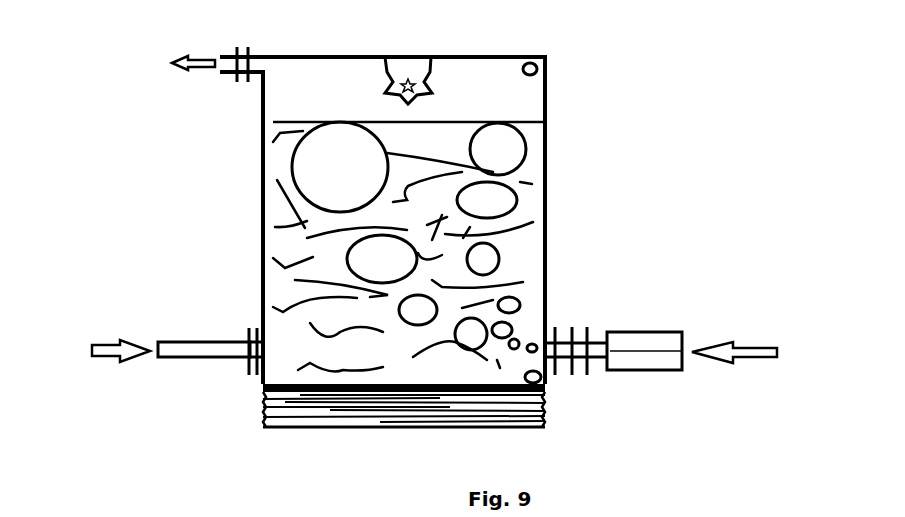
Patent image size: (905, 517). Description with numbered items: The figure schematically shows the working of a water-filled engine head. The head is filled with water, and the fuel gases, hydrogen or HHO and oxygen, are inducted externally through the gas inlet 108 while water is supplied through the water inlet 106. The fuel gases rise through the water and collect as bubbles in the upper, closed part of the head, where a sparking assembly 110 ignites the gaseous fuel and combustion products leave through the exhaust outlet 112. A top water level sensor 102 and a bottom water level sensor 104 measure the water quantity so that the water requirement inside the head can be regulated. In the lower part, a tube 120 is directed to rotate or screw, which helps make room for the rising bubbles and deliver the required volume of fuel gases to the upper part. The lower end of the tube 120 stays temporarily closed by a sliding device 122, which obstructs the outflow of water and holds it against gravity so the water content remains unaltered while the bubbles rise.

The top water level sensor 102 is at (545, 70).
The bottom water level sensor 104 is at (543, 380).
The water inlet 106 is at (152, 351).
The gas inlet 108 is at (686, 351).
The sparking assembly 110 is at (415, 65).
The exhaust outlet 112 is at (185, 64).
The tube 120 is at (263, 386).
The sliding device 122 is at (262, 413).